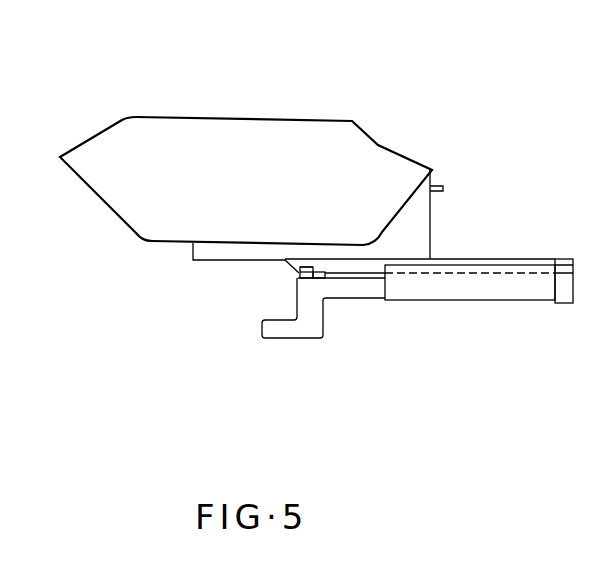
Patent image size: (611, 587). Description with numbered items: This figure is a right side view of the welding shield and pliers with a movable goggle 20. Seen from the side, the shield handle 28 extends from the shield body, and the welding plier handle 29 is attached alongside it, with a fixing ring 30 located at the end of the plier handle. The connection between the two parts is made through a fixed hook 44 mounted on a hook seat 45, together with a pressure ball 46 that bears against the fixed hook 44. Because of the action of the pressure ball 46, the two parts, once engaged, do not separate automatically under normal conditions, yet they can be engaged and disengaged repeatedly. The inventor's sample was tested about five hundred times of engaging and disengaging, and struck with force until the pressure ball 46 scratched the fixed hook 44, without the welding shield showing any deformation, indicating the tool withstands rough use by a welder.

The welding shield and pliers with a movable goggle 20 is at (236, 105).
The shield handle 28 is at (372, 263).
The welding plier handle 29 is at (473, 292).
The fixing ring 30 is at (562, 303).
The fixed hook 44 is at (298, 276).
The hook seat 45 is at (306, 267).
The pressure ball 46 is at (321, 272).